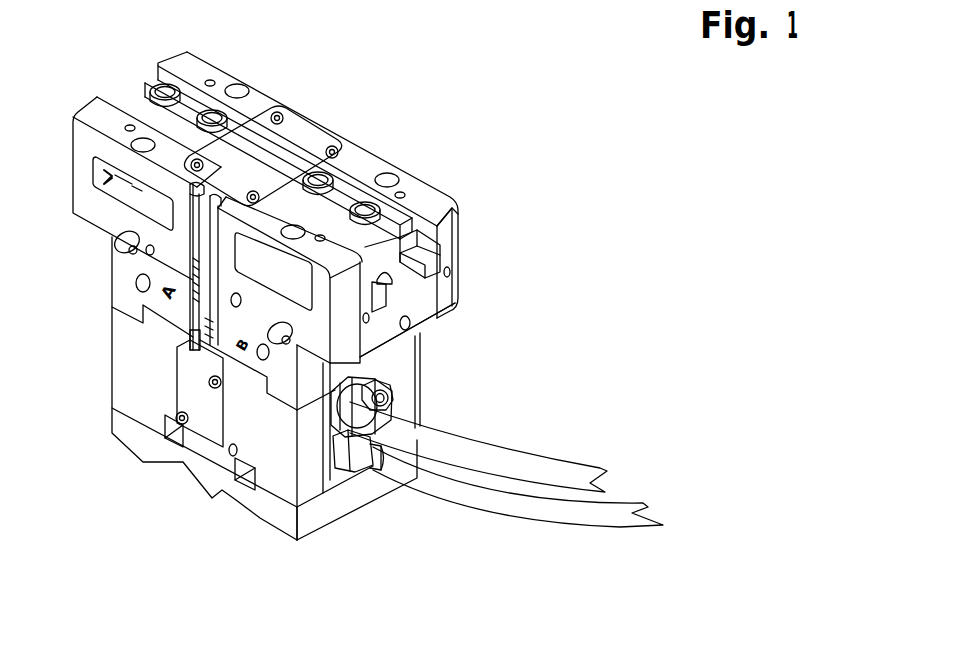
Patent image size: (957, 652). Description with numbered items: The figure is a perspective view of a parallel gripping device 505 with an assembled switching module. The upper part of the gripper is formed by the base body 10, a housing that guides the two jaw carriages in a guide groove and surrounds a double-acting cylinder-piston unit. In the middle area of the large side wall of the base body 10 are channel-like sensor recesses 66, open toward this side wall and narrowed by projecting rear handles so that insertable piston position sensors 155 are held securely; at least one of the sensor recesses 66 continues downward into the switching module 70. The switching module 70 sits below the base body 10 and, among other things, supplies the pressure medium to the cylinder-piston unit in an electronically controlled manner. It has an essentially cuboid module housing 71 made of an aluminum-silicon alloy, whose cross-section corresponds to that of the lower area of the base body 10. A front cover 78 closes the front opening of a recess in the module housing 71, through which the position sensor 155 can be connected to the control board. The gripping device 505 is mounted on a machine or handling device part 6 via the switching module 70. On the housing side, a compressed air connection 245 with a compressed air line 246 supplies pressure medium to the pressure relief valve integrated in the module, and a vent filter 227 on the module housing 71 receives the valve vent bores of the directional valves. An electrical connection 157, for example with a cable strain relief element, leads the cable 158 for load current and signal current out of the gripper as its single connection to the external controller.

The base body 10 is at (448, 238).
The gripping device 505 is at (472, 293).
The vent filter 227 is at (392, 391).
The electrical connection 157 is at (390, 394).
The cable for load current and signal current 158 is at (452, 453).
The sensor recesses 66 is at (195, 258).
The position sensor 155 is at (197, 345).
The front cover 78 is at (212, 420).
The module housing 71 is at (275, 470).
The switching module 70 is at (317, 509).
The machine part 6 is at (342, 495).
The compressed air connection 245 is at (342, 447).
The compressed air line 246 is at (445, 482).